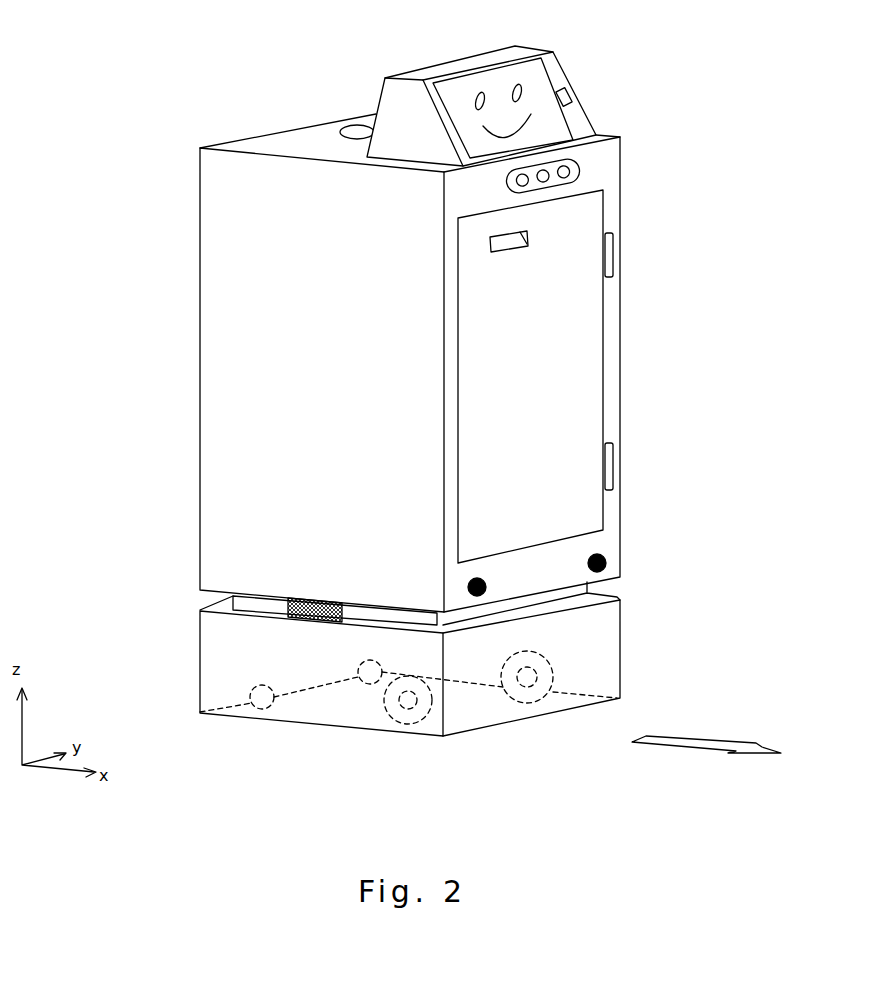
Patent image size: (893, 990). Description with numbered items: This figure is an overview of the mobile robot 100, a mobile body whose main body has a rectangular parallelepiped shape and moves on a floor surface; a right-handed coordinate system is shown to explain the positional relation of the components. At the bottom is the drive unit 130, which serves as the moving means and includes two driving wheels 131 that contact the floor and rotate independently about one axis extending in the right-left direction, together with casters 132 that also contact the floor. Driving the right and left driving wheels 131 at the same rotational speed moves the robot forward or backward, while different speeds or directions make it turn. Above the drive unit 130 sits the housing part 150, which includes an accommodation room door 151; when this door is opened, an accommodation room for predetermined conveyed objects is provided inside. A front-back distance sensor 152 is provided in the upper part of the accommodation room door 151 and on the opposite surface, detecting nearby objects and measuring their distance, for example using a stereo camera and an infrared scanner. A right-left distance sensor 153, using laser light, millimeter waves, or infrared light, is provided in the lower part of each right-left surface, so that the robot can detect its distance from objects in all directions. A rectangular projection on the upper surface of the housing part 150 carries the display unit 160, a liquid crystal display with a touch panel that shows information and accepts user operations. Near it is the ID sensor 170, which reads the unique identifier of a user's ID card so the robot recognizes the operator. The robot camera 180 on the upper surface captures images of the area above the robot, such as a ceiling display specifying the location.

The mobile robot 100 is at (295, 128).
The drive unit 130 is at (622, 597).
The driving wheels 131 is at (557, 657).
The casters 132 is at (252, 688).
The housing part 150 is at (620, 403).
The accommodation room door 151 is at (570, 330).
The front-back distance sensor 152 is at (583, 165).
The right-left distance sensor 153 is at (628, 560).
The display unit 160 is at (532, 75).
The ID sensor 170 is at (576, 88).
The robot camera 180 is at (362, 126).